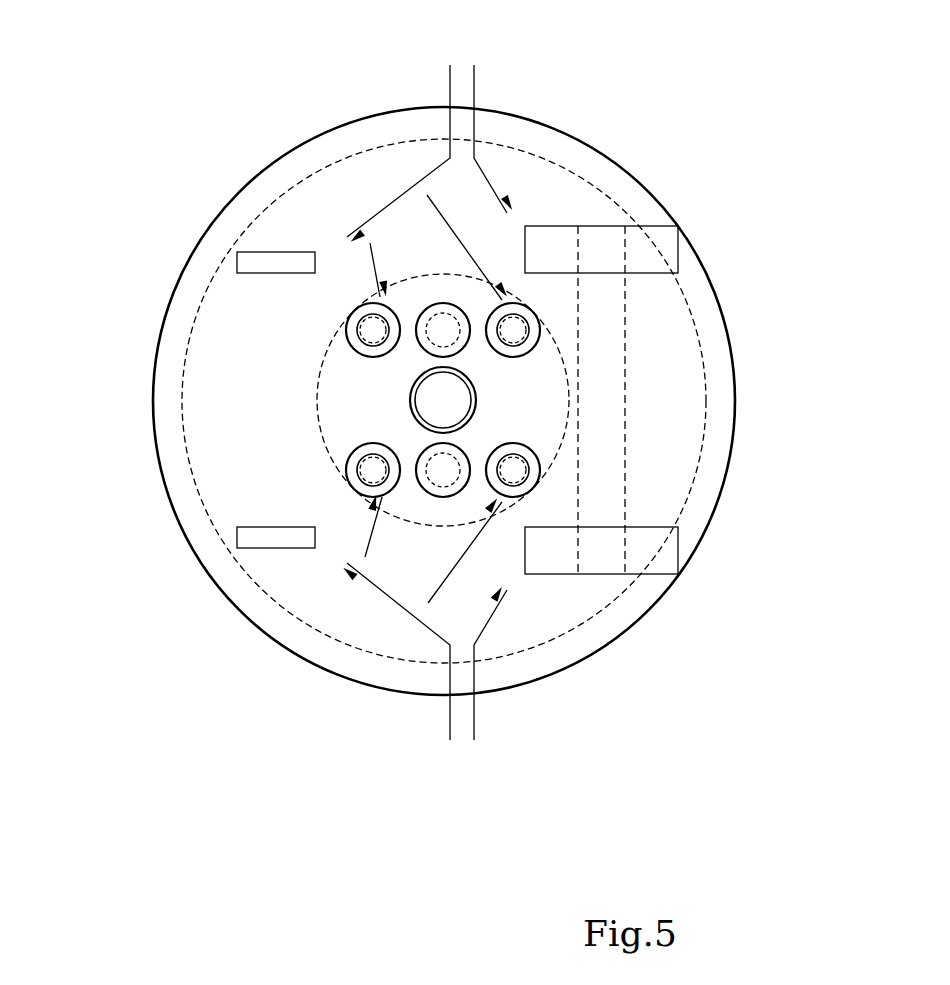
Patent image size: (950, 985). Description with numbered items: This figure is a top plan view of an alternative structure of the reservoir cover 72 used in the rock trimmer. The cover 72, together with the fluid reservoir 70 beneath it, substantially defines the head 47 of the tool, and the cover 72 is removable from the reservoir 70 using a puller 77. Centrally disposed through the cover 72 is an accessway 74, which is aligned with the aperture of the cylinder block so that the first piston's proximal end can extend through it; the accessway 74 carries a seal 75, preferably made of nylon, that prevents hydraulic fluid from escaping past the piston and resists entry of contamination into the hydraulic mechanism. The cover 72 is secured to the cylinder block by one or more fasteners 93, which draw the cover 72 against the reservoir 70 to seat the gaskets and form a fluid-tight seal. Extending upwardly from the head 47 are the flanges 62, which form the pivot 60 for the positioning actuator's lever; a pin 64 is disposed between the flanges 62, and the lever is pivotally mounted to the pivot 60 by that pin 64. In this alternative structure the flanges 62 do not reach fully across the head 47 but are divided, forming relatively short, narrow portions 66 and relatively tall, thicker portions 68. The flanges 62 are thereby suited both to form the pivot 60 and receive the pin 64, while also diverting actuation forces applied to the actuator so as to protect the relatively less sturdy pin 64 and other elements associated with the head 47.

The head 47 is at (479, 372).
The pivot 60 is at (526, 401).
The flanges 62 is at (427, 404).
The pin 64 is at (724, 400).
The relatively short, narrow portions 66 is at (201, 376).
The relatively tall, thicker portions 68 is at (697, 371).
The fluid reservoir 70 is at (105, 530).
The reservoir cover 72 is at (268, 356).
The accessway 74 is at (671, 435).
The seal 75 is at (548, 393).
The puller 77 is at (423, 348).
The fasteners 93 is at (408, 169).